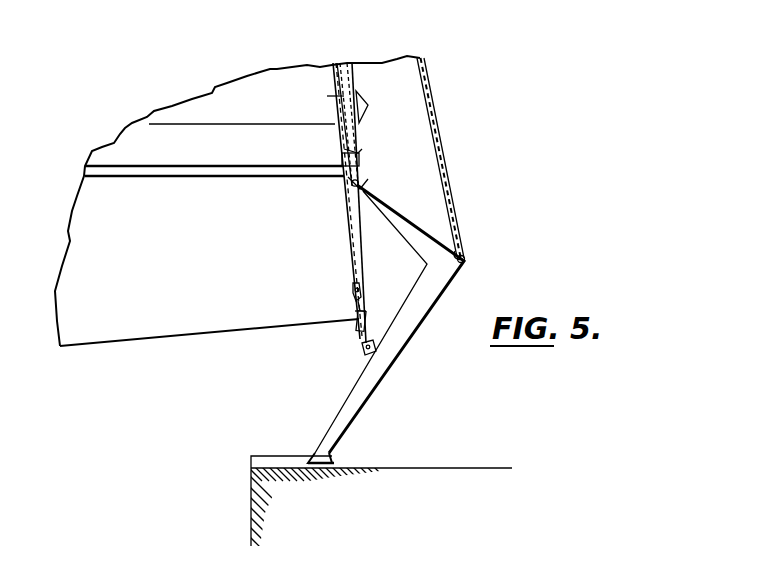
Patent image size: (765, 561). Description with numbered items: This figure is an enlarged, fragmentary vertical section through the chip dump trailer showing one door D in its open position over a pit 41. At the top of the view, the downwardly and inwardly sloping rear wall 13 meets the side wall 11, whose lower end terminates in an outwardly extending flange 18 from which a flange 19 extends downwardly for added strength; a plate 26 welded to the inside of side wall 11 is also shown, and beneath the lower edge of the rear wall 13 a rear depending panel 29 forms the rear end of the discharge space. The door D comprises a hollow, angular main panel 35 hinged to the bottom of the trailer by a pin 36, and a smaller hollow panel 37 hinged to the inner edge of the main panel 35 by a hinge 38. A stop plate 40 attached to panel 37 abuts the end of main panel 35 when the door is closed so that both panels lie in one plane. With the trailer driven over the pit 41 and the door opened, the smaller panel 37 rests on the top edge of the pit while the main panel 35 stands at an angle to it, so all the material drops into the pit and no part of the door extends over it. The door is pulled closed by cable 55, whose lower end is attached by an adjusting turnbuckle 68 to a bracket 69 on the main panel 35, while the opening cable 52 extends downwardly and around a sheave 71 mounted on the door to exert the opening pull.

The side wall 11 is at (347, 83).
The rear wall 13 is at (265, 70).
The outwardly extending flange 18 is at (352, 151).
The downwardly extending flange 19 is at (357, 157).
The plate 26 is at (325, 95).
The rear depending panel 29 is at (181, 325).
The main panel 35 is at (417, 324).
The pin 36 is at (360, 183).
The smaller panel 37 is at (263, 455).
The hinge 38 is at (313, 452).
The stop plate 40 is at (317, 460).
The pit 41 is at (249, 481).
The cable 52 is at (428, 112).
The cable 55 is at (345, 200).
The adjusting turnbuckle 68 is at (351, 311).
The bracket 69 is at (359, 352).
The sheave 71 is at (466, 256).
The door D is at (374, 406).